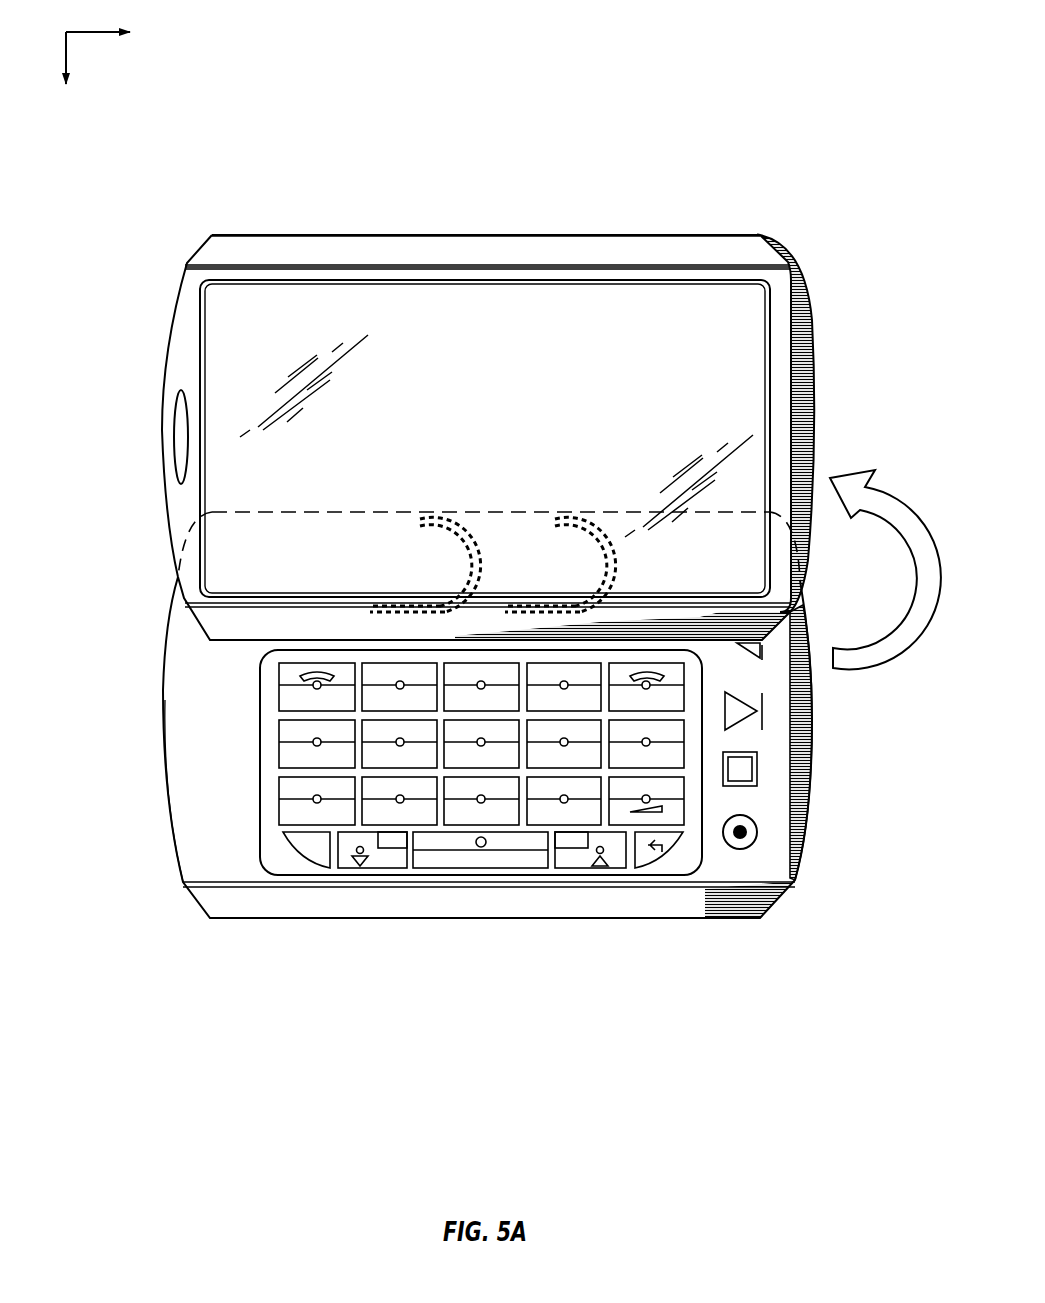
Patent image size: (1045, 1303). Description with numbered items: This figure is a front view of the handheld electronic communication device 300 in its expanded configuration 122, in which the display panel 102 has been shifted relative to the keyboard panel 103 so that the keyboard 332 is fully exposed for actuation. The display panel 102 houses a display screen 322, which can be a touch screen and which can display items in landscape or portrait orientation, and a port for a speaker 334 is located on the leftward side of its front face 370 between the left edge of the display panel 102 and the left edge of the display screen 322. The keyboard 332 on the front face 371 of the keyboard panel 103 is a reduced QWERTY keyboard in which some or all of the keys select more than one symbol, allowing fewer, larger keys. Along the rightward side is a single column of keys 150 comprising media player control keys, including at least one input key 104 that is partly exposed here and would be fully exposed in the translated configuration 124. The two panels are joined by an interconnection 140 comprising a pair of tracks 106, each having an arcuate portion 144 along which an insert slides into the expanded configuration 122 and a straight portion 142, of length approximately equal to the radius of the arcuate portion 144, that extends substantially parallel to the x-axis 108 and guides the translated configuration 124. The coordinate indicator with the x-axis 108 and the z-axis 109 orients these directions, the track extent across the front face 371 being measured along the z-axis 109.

The handheld electronic communication device 300 is at (498, 493).
The display panel 102 is at (657, 245).
The keyboard panel 103 is at (183, 817).
The input key 104 is at (770, 656).
The track 106 is at (459, 531).
The x-axis 108 is at (175, 30).
The z-axis 109 is at (86, 110).
The expanded configuration 122 is at (447, 213).
The translated configuration 124 is at (805, 213).
The interconnection 140 is at (482, 440).
The straight portion 142 is at (378, 607).
The arcuate portion 144 is at (466, 570).
The column of keys 150 is at (741, 870).
The display screen 322 is at (745, 318).
The keyboard 332 is at (283, 860).
The speaker 334 is at (178, 440).
The front face 370 is at (557, 263).
The front face 371 is at (207, 720).